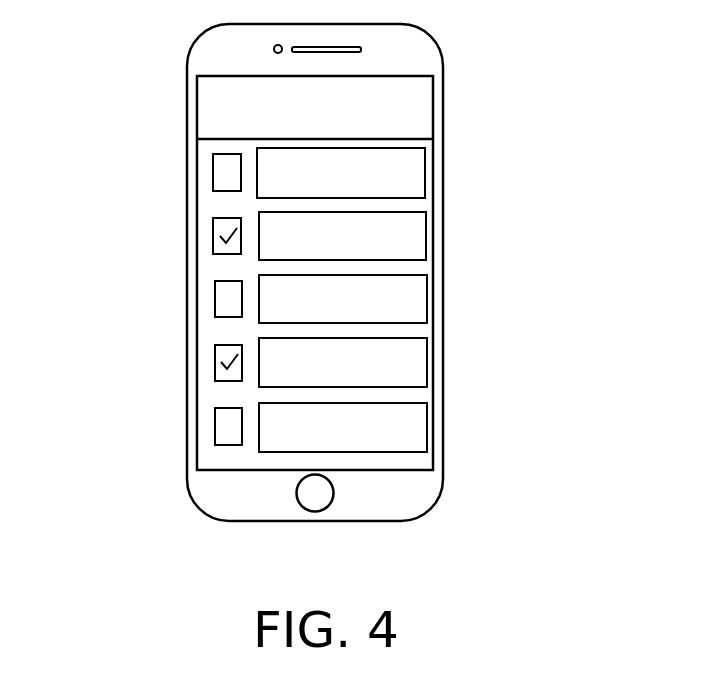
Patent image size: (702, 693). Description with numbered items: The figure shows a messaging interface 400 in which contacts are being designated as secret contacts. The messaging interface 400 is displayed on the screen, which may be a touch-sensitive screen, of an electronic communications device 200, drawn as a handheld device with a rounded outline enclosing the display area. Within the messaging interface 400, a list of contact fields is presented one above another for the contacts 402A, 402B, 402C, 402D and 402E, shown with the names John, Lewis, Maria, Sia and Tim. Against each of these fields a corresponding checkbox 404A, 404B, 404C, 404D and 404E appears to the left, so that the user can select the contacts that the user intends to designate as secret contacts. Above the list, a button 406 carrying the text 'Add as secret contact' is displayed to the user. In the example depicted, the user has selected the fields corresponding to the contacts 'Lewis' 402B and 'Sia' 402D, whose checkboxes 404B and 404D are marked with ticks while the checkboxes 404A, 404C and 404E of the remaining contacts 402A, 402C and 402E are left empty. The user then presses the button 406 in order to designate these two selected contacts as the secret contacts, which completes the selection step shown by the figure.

The electronic communications device 200 is at (438, 38).
The messaging interface 400 is at (422, 463).
The button 406 is at (422, 108).
The contact 402A is at (417, 167).
The contact 402B is at (419, 227).
The contact 402C is at (421, 297).
The contact 402D is at (420, 360).
The contact 402E is at (420, 423).
The checkbox 404A is at (215, 184).
The checkbox 404B is at (215, 248).
The checkbox 404C is at (215, 312).
The checkbox 404D is at (215, 375).
The checkbox 404E is at (215, 437).